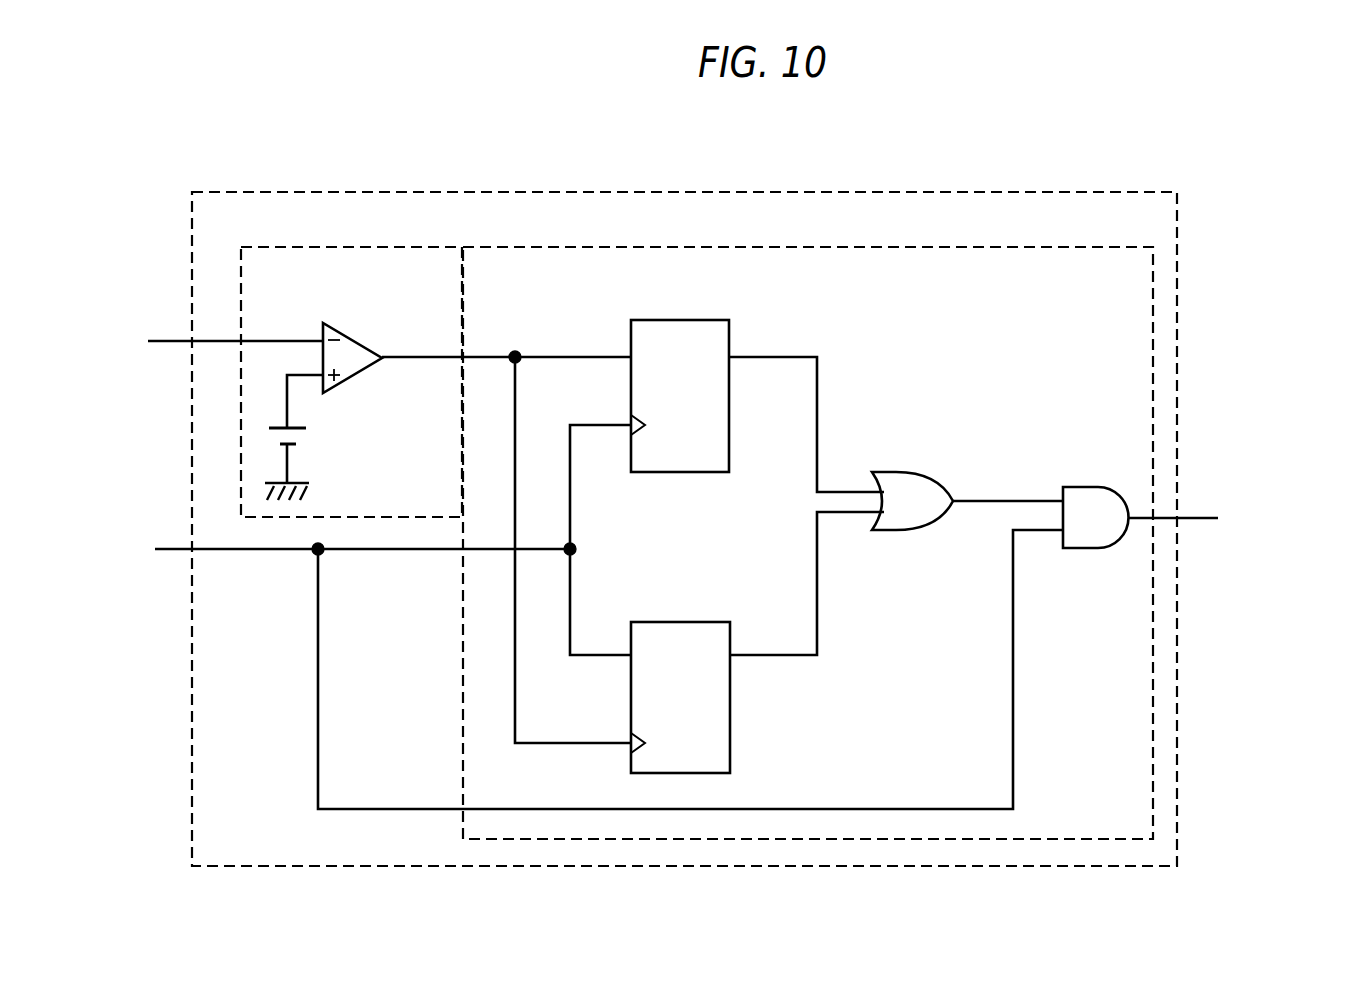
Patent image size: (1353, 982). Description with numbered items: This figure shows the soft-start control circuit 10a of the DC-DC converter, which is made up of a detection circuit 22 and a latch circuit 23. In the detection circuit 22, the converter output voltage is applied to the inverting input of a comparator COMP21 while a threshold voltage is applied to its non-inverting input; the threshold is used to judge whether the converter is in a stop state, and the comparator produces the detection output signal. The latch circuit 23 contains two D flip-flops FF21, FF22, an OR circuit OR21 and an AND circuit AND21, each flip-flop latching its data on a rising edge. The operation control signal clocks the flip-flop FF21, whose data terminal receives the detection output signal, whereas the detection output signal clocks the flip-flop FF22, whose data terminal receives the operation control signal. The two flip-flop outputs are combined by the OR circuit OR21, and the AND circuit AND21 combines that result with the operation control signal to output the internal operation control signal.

The soft-start control circuit 10a is at (586, 192).
The detection circuit 22 is at (462, 298).
The latch circuit 23 is at (873, 247).
The comparator COMP21 is at (368, 352).
The flip-flop FF21 is at (682, 328).
The flip-flop FF22 is at (682, 630).
The OR circuit OR21 is at (912, 484).
The AND circuit AND21 is at (1089, 499).